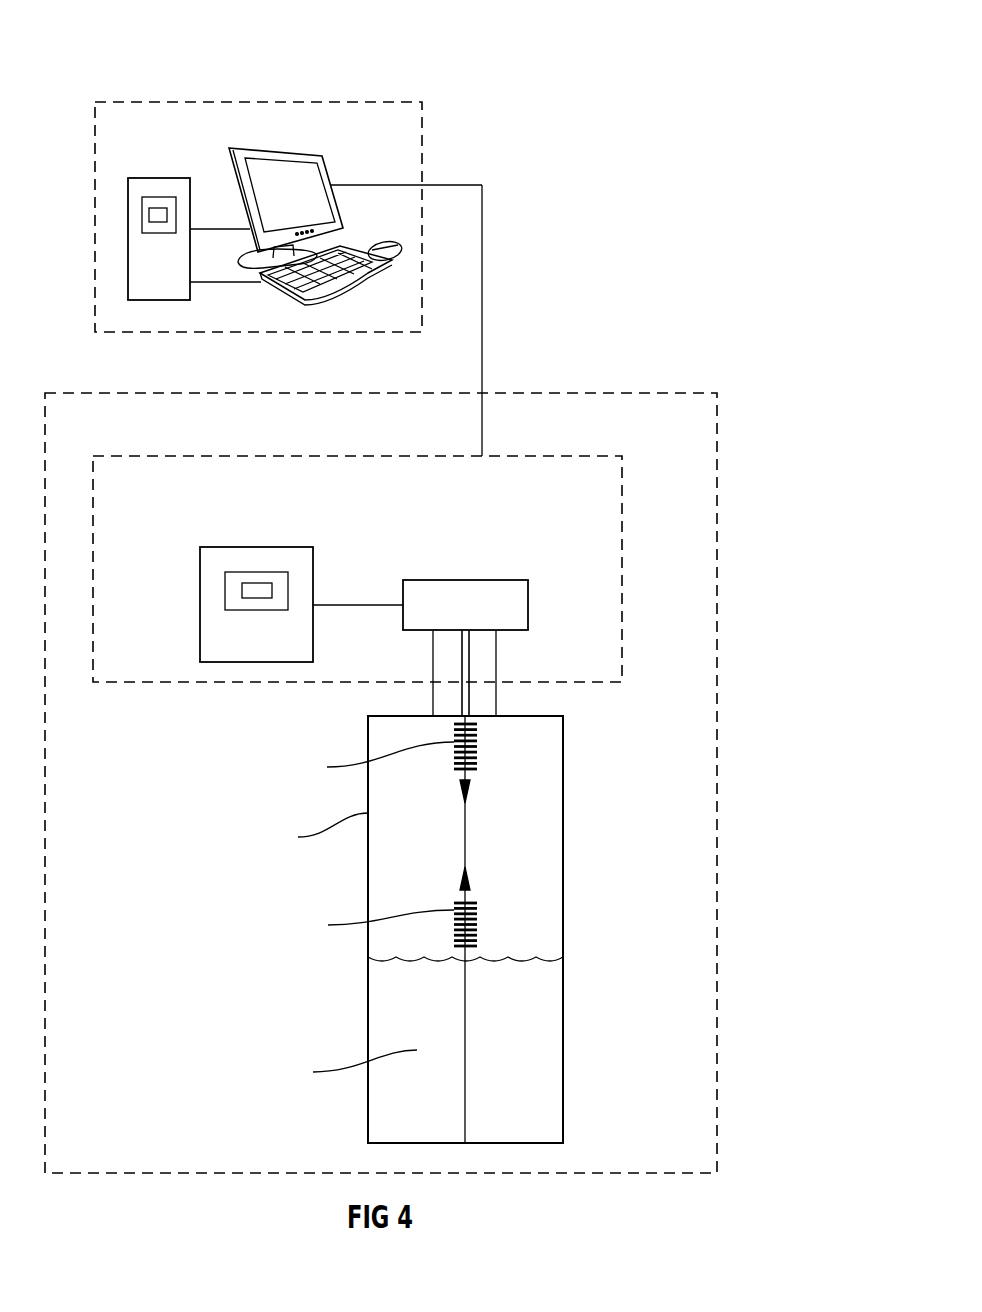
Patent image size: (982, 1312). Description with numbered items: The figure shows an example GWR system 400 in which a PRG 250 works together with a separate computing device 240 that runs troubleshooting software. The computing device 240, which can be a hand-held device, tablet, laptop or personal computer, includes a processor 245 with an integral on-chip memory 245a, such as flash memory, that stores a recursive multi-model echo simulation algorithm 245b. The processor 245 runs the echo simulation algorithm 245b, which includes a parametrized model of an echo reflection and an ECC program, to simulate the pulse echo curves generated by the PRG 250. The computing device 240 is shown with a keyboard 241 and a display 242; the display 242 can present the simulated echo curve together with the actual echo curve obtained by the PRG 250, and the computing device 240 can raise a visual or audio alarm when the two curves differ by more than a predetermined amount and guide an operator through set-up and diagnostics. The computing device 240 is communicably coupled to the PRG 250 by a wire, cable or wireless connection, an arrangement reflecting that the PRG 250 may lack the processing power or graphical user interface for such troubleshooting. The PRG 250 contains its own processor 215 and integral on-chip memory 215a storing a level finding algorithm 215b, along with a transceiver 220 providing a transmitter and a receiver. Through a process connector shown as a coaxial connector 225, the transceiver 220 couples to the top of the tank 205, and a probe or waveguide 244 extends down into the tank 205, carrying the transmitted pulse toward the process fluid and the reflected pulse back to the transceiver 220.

The GWR system 400 is at (642, 393).
The computing device 240 is at (422, 170).
The processor 245 is at (135, 282).
The integral (on-chip) memory 245a is at (142, 212).
The recursive multi-model echo simulation algorithm 245b is at (160, 206).
The display 242 is at (272, 156).
The keyboard 241 is at (328, 295).
The PRG 250 is at (623, 533).
The processor 215 is at (200, 635).
The integral (on-chip) memory 215a is at (288, 587).
The level finding algorithm 215b is at (252, 583).
The transceiver 220 is at (458, 580).
The coaxial connector (coax) 225 is at (496, 702).
The tank 205 is at (563, 813).
The probe (waveguide) 244 is at (465, 833).